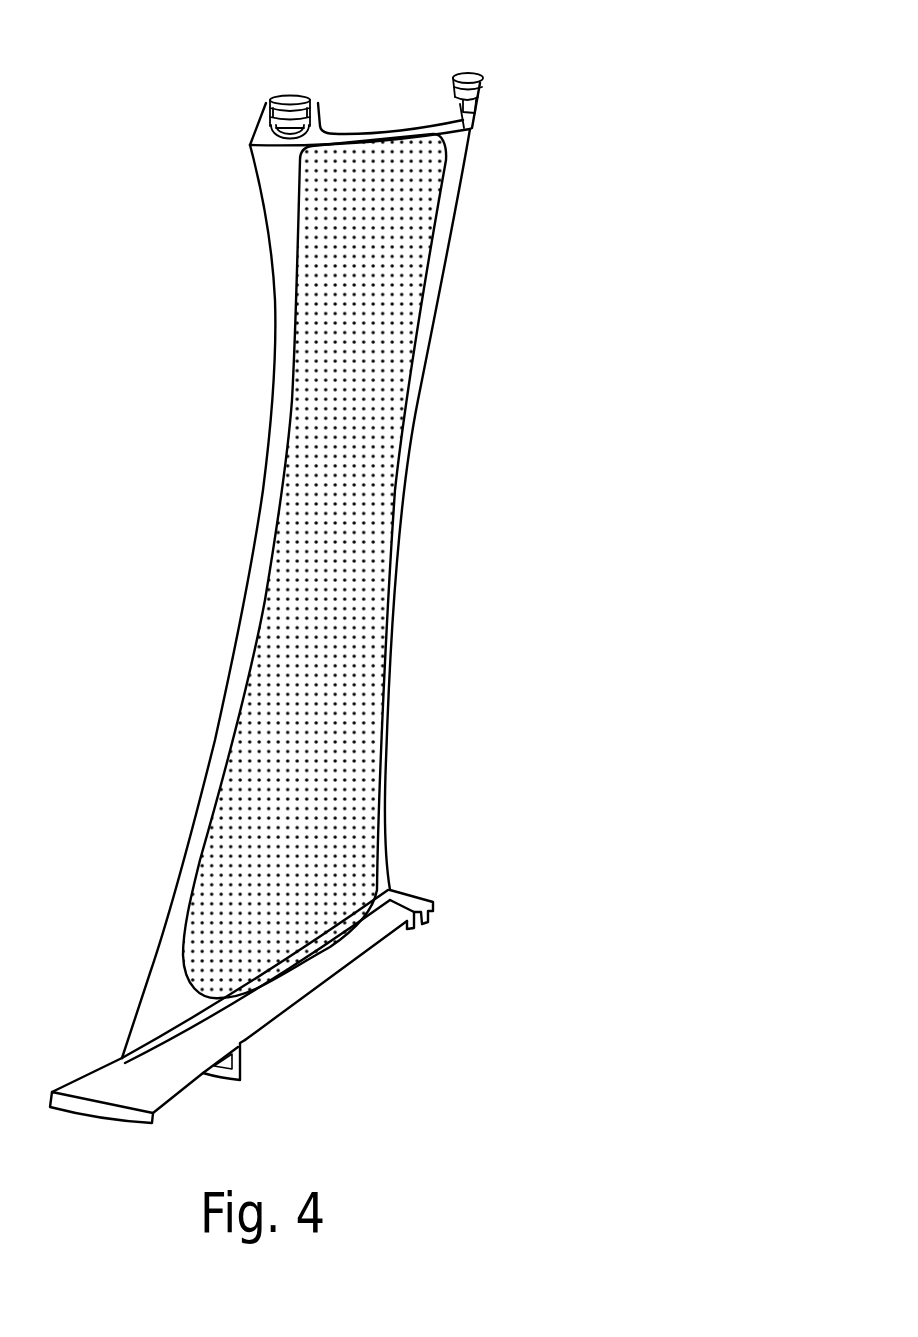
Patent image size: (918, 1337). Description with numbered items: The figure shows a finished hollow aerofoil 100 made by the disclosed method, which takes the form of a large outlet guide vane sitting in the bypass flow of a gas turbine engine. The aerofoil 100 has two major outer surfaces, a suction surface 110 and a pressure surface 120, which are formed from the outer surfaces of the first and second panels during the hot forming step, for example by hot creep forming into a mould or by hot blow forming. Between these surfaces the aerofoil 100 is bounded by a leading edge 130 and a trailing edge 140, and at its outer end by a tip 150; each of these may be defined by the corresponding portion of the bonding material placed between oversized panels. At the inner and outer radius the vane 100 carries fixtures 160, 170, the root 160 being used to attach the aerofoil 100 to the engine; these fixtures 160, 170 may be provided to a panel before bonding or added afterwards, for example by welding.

The aerofoil 100 is at (515, 106).
The suction surface 110 is at (363, 618).
The pressure surface 120 is at (428, 393).
The leading edge 130 is at (258, 532).
The trailing edge 140 is at (403, 515).
The tip 150 is at (378, 133).
The root 160 is at (160, 1080).
The fixture 170 is at (287, 97).